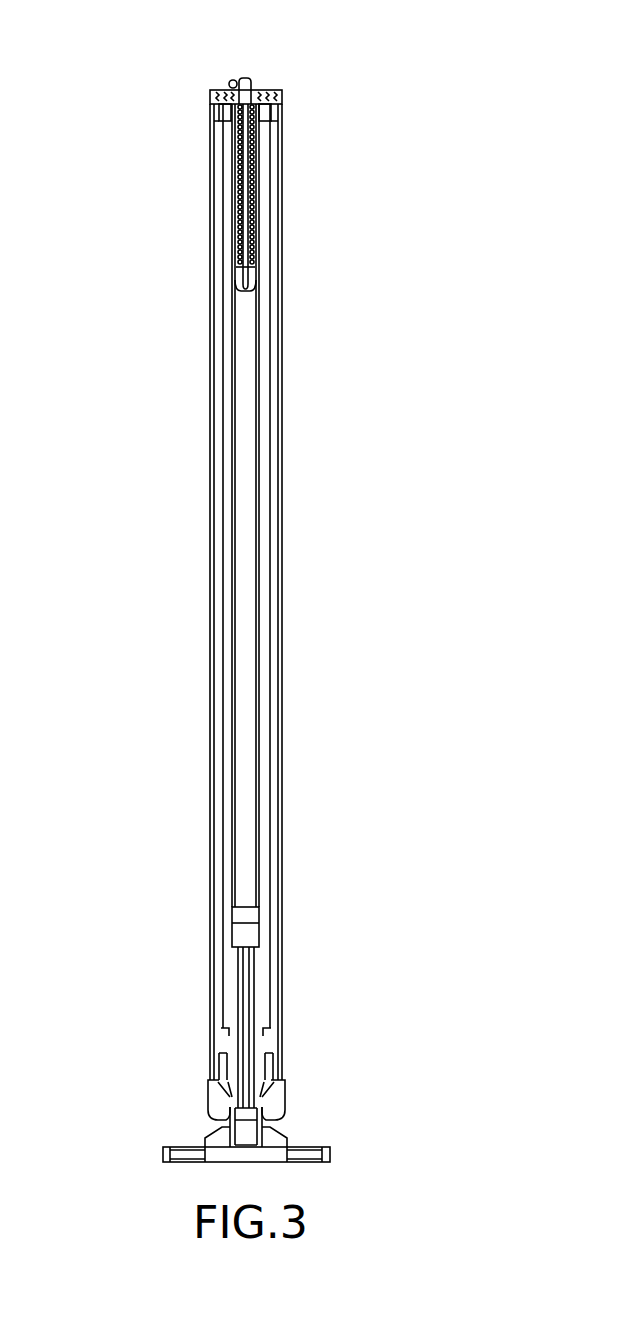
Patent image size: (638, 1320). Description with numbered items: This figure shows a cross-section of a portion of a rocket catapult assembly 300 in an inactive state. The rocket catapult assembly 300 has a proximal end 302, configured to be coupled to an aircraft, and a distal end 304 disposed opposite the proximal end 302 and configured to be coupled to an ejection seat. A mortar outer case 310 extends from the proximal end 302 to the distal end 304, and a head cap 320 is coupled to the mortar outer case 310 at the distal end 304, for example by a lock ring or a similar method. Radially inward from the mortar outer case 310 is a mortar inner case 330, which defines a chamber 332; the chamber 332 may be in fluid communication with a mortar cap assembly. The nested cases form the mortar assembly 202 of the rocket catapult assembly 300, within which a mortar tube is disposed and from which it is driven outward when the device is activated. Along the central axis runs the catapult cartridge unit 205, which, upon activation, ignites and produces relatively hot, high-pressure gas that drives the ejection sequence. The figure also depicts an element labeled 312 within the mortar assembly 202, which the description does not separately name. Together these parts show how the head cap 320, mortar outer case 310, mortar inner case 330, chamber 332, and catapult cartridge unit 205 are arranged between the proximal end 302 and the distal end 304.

The rocket catapult assembly 300 is at (322, 62).
The mortar assembly 202 is at (202, 270).
The head cap 320 is at (222, 112).
The distal end 304 is at (212, 123).
The mortar outer case 310 is at (212, 193).
The inner tube 312 is at (222, 171).
The mortar inner case 330 is at (235, 336).
The chamber 332 is at (245, 400).
The catapult cartridge unit 205 is at (244, 1043).
The proximal end 302 is at (282, 1143).